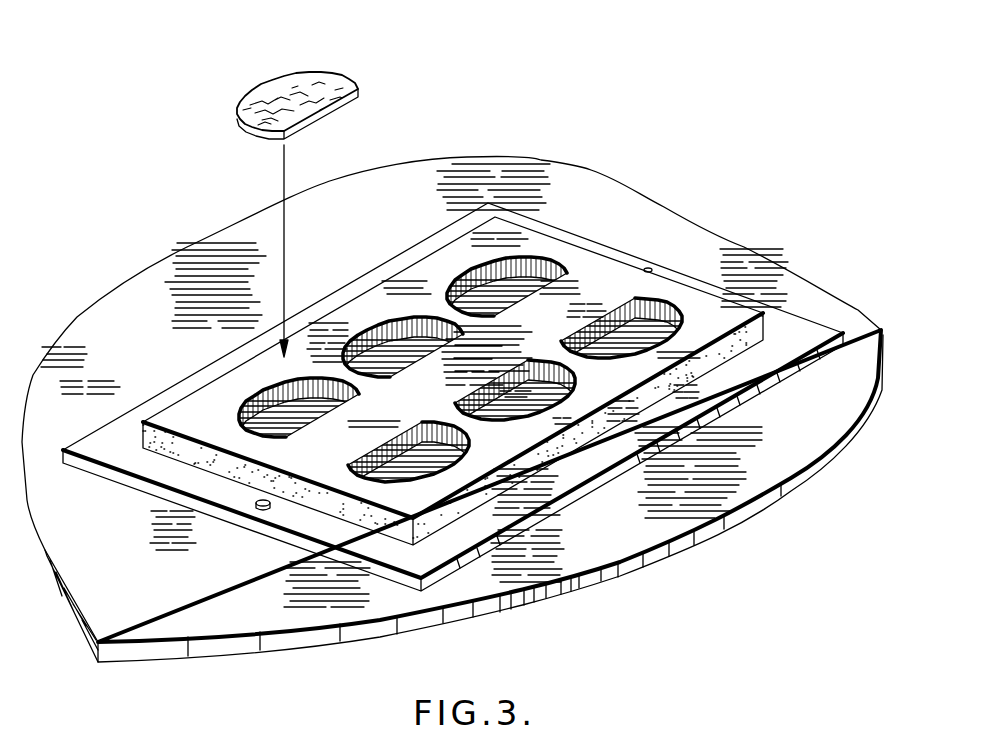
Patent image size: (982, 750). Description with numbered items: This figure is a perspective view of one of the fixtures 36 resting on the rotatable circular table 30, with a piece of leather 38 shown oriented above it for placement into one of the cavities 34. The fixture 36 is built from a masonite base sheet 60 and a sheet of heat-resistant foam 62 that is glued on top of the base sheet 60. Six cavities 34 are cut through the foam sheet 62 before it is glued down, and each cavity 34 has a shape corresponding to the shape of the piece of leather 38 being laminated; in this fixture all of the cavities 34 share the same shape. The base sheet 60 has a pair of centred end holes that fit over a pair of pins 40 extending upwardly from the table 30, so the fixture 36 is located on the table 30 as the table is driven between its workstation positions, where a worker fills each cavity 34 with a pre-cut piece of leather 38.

The rotatable circular table 30 is at (696, 240).
The cavities 34 is at (470, 293).
The fixture 36 is at (453, 342).
The piece of leather 38 is at (335, 83).
The pins 40 is at (262, 509).
The masonite base sheet 60 is at (163, 478).
The heat-resistant foam sheet 62 is at (450, 374).